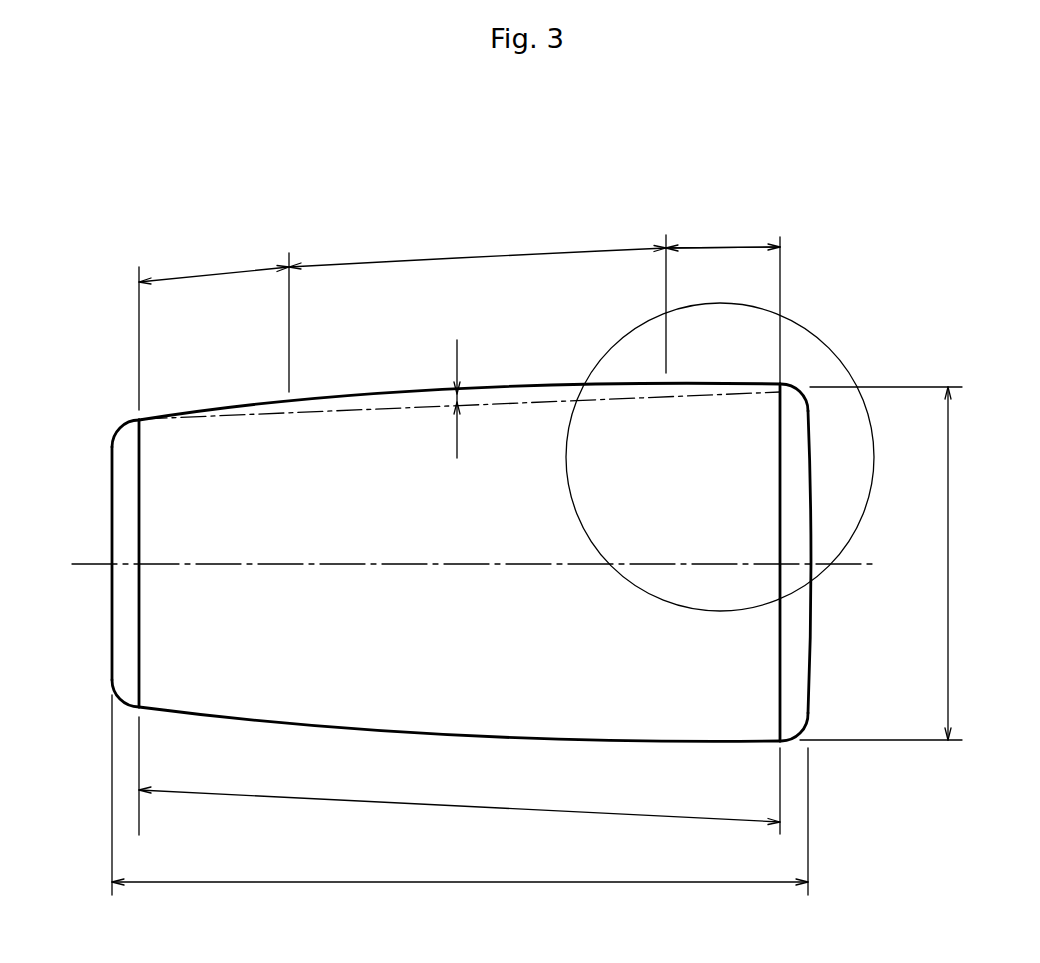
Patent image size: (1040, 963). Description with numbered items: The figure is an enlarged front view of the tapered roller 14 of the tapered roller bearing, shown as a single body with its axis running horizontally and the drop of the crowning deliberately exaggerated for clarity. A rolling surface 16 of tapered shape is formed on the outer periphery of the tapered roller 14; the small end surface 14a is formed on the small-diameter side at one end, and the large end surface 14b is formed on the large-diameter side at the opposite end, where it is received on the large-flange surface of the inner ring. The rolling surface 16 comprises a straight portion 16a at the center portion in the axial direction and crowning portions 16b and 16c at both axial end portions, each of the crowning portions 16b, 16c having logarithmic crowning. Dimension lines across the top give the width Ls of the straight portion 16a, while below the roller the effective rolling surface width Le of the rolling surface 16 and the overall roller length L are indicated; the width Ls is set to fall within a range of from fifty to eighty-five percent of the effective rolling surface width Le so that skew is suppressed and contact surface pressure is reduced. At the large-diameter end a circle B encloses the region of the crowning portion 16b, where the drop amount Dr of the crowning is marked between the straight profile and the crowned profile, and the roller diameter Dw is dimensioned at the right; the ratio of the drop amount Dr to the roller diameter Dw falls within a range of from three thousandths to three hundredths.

The tapered roller 14 is at (372, 672).
The small end surface 14a is at (112, 606).
The large end surface 14b is at (811, 621).
The rolling surface 16 is at (513, 388).
The straight portion 16a is at (424, 262).
The crowning portion 16b is at (718, 243).
The crowning portion 16c is at (213, 270).
The enlarged detail region B is at (815, 333).
The width of the straight portion Ls is at (497, 257).
The drop amount Dr is at (455, 358).
The roller diameter Dw is at (950, 571).
The effective rolling surface width Le is at (434, 806).
The roller length L is at (466, 886).